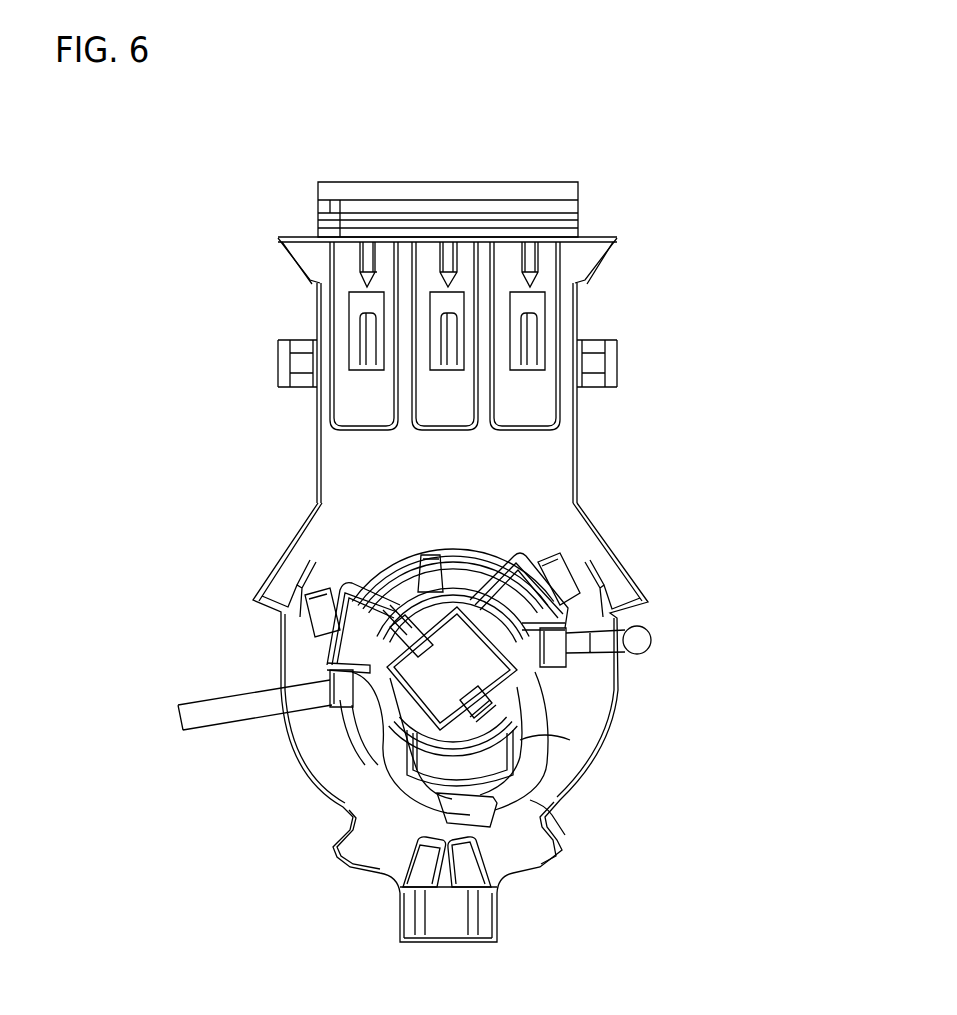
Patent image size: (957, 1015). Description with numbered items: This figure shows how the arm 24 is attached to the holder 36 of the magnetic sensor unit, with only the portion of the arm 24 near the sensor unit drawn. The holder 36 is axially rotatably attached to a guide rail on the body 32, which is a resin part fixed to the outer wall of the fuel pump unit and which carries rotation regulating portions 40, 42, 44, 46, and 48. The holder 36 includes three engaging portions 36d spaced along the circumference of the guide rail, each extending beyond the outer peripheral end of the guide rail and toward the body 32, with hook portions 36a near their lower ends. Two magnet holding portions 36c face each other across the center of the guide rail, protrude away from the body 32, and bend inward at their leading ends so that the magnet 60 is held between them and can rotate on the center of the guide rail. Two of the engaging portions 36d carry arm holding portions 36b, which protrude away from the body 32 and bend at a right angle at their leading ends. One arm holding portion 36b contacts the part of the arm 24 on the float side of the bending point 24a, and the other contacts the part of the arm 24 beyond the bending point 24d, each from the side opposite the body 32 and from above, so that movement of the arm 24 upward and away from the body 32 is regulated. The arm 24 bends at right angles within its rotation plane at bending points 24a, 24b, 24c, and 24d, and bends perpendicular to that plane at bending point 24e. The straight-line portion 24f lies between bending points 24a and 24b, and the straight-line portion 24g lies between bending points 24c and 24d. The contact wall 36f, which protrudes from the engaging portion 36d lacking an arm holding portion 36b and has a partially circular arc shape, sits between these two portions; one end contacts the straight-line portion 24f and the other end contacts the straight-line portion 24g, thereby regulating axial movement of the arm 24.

The arm 24 is at (597, 653).
The bending point 24a is at (383, 703).
The bending point 24b is at (403, 787).
The bending point 24c is at (585, 770).
The bending point 24d is at (567, 692).
The bending point 24e is at (651, 642).
The straight-line portion 24f is at (357, 767).
The straight-line portion 24g is at (570, 740).
The body 32 is at (555, 453).
The holder 36 is at (365, 320).
The hook portion 36a is at (307, 638).
The arm holding portion 36b is at (340, 685).
The magnet holding portion 36c is at (393, 562).
The engaging portion 36d is at (330, 590).
The contact wall 36f is at (560, 845).
The rotation regulating portion 40 is at (627, 590).
The rotation regulating portion 42 is at (470, 855).
The rotation regulating portion 44 is at (407, 860).
The rotation regulating portion 46 is at (268, 585).
The rotation regulating portion 48 is at (363, 837).
The magnet 60 is at (478, 673).